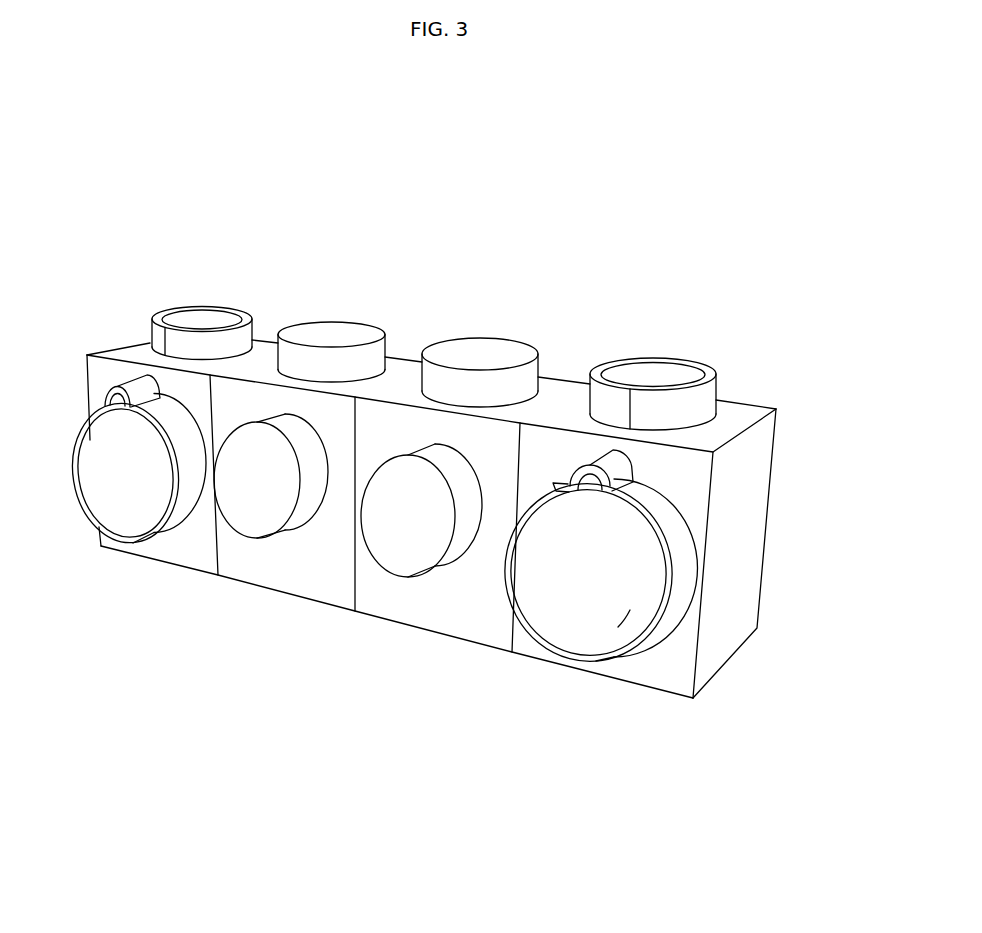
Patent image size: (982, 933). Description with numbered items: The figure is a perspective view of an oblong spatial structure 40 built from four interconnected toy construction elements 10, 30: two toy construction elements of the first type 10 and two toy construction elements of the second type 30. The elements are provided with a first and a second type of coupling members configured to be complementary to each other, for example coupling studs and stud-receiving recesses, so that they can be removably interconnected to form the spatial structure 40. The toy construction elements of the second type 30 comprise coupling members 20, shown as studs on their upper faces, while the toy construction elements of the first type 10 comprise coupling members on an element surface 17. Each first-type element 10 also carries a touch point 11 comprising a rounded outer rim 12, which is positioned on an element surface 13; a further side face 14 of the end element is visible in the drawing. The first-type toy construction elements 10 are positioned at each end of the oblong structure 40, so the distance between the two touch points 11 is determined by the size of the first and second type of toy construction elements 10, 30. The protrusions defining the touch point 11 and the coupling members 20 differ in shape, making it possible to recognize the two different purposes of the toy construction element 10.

The toy construction element of the first type 10 is at (92, 602).
The touch point 11 is at (123, 500).
The rounded outer rim 12 is at (640, 518).
The element surface 13 is at (197, 553).
The side face 14 is at (738, 592).
The element surface 17 is at (132, 350).
The coupling members 20 is at (191, 314).
The toy construction element of the second type 30 is at (257, 648).
The spatial structure 40 is at (772, 245).